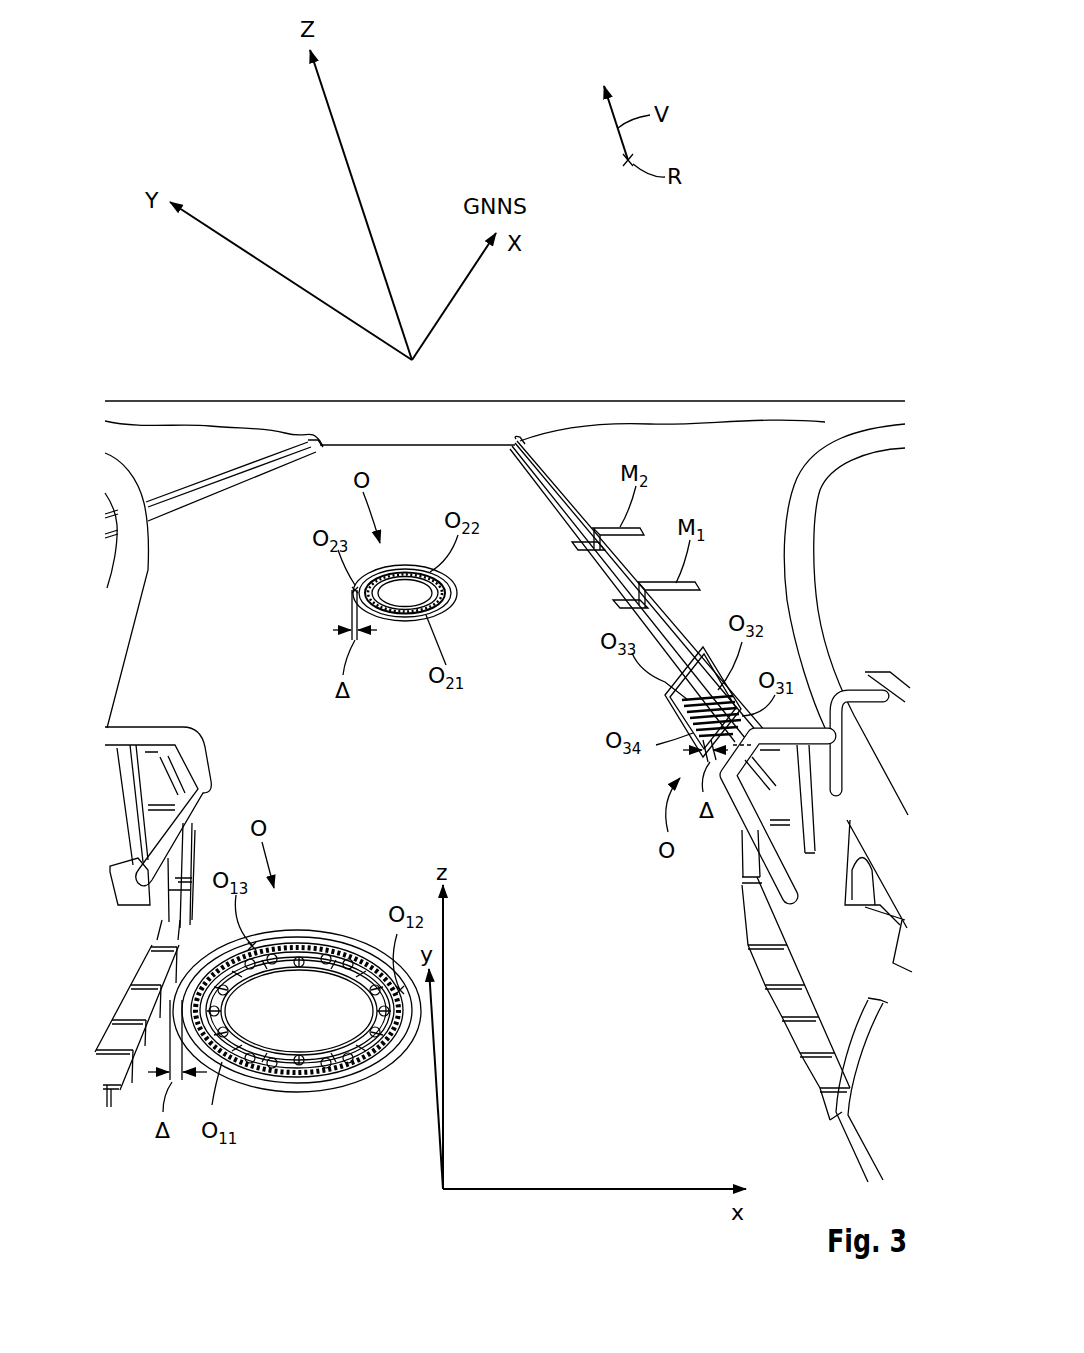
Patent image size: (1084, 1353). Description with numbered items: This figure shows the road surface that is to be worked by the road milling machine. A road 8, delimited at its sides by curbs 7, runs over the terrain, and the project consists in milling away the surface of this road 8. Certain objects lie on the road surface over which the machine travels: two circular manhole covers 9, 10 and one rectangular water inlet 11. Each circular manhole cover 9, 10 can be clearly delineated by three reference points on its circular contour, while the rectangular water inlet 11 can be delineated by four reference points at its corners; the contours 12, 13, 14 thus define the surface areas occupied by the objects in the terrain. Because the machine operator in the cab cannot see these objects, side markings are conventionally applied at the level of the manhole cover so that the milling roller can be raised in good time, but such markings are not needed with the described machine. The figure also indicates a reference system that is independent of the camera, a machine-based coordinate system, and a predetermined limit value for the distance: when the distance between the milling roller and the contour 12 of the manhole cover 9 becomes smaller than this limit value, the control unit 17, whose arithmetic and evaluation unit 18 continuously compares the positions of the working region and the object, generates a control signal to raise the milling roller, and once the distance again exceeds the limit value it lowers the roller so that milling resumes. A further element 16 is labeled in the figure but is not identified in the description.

The curbs 7 is at (232, 478).
The road 8 is at (468, 430).
The manhole cover 9 is at (297, 961).
The manhole cover 10 is at (436, 581).
The water inlet 11 is at (659, 680).
The contour 12 is at (297, 988).
The contour 13 is at (408, 565).
The contour 14 is at (455, 590).
The ring pattern of cover 16 is at (355, 944).
The control unit 17 is at (452, 603).
The arithmetic and evaluation unit 18 is at (668, 708).